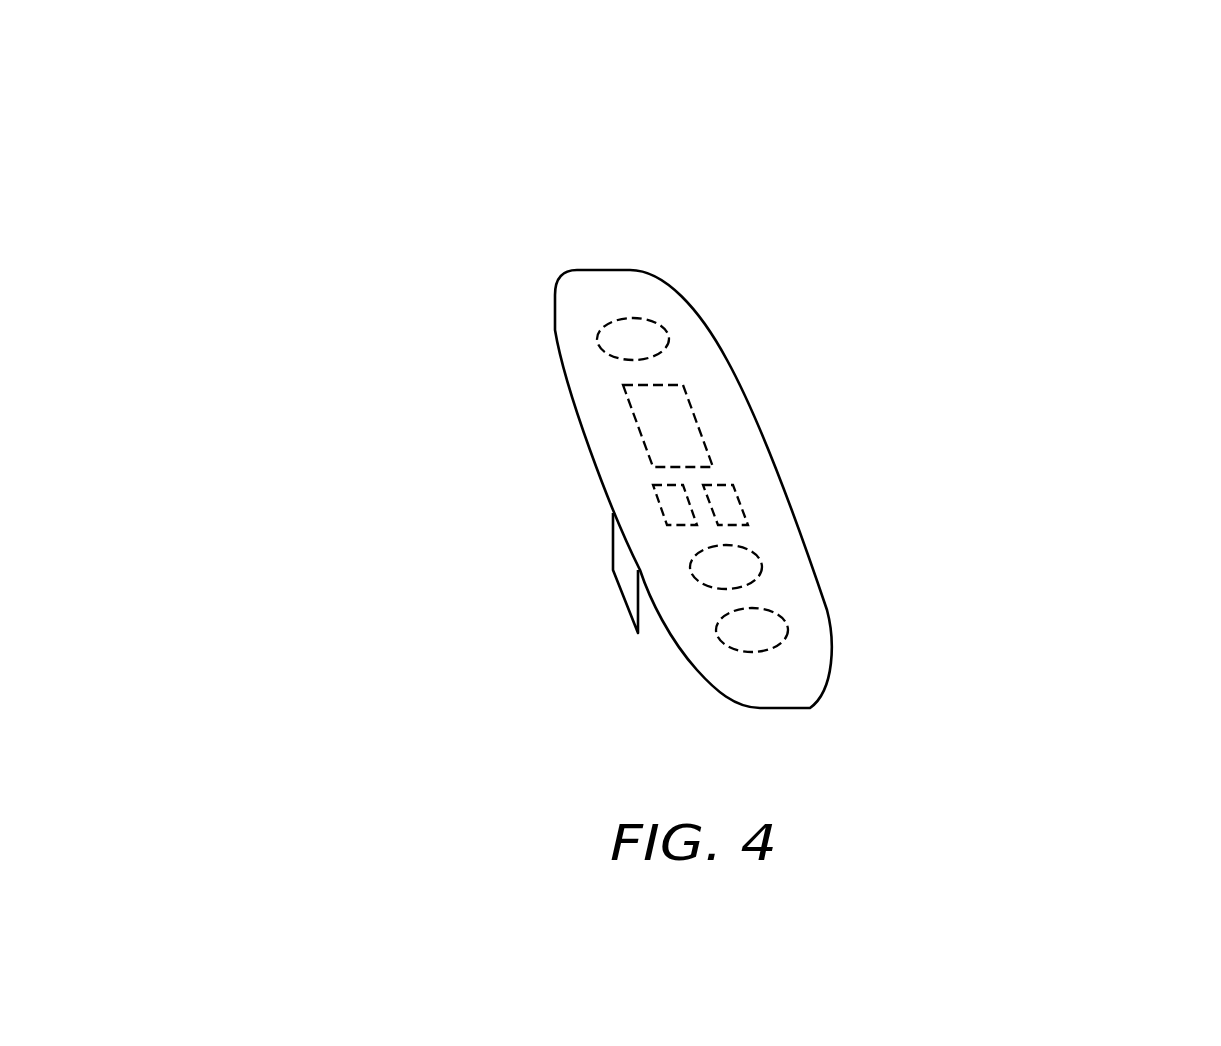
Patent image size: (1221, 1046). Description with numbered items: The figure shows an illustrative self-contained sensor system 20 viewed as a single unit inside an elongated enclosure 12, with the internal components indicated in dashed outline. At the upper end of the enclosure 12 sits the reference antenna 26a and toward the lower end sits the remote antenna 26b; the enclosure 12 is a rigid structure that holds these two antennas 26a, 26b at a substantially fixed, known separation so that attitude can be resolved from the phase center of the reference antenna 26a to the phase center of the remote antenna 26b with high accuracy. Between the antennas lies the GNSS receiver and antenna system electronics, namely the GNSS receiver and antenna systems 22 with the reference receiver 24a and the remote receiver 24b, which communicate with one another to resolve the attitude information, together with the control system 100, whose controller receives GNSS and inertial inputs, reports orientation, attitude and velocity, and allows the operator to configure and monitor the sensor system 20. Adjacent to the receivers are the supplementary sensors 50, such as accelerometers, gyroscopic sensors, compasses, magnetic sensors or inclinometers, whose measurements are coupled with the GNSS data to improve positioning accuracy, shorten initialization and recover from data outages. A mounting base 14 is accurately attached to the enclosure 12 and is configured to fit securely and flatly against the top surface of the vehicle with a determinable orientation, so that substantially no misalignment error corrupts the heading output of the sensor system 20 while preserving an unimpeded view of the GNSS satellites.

The sensor system 20 is at (1087, 143).
The enclosure 12 is at (633, 263).
The reference antenna 26a is at (673, 337).
The remote antenna 26b is at (783, 658).
The GNSS receiver and antenna systems 22 is at (450, 347).
The reference receiver 24a is at (450, 347).
The remote receiver 24b is at (450, 347).
The control system 100 is at (620, 405).
The supplementary sensors 50 is at (650, 503).
The mounting base 14 is at (617, 600).